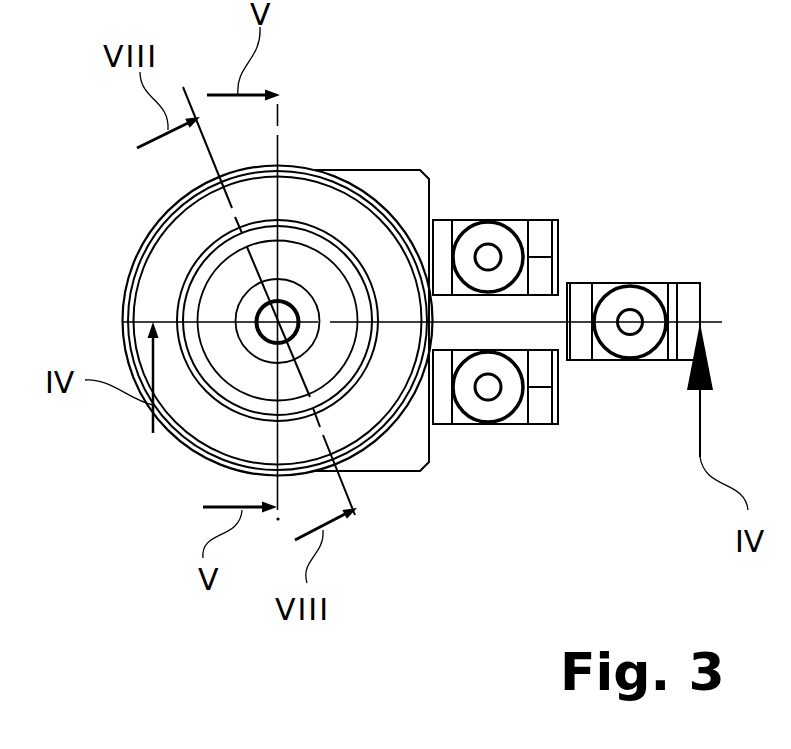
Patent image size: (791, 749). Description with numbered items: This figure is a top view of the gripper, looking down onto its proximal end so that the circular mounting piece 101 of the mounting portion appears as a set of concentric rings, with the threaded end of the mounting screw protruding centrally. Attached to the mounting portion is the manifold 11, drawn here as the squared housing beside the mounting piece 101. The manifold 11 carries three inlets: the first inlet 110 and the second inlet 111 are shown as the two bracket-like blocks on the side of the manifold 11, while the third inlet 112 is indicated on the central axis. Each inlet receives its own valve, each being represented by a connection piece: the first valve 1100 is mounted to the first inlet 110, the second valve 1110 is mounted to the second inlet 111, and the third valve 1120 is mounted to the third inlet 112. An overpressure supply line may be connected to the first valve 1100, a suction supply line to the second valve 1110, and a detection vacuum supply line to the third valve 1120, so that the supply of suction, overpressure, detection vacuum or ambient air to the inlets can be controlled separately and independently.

The manifold 11 is at (398, 183).
The mounting piece 101 is at (167, 252).
The third inlet 112 is at (427, 316).
The second inlet 111 is at (438, 220).
The second valve 1110 is at (493, 232).
The first inlet 110 is at (432, 424).
The first valve 1100 is at (497, 404).
The third valve 1120 is at (630, 295).